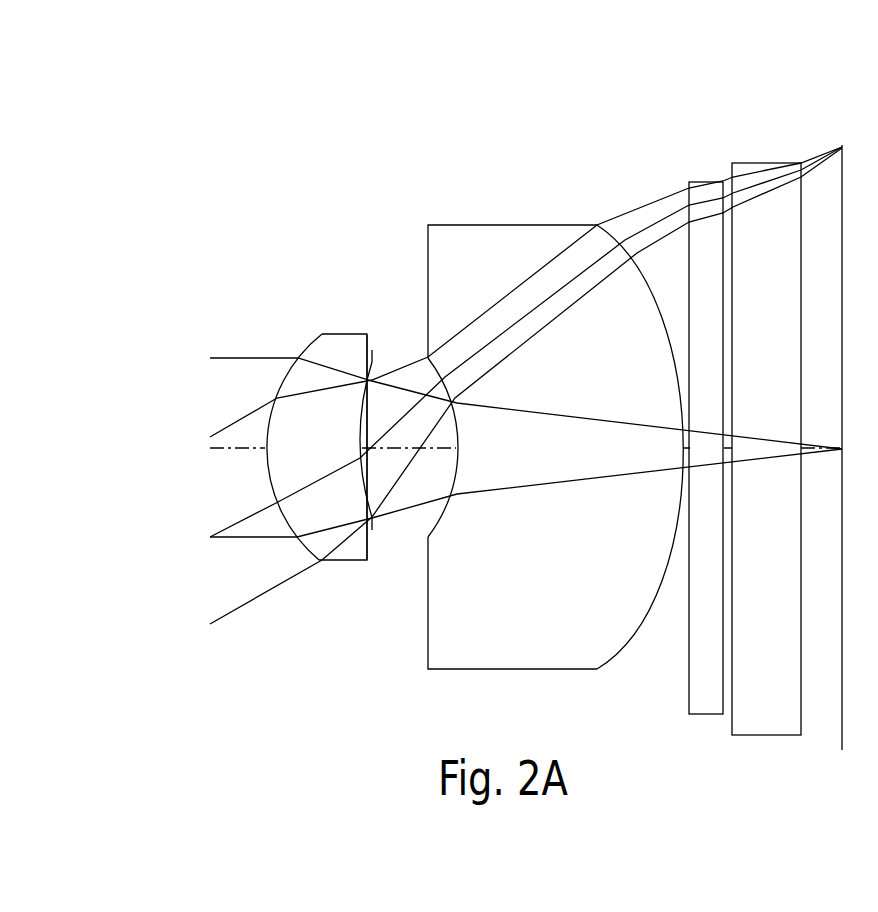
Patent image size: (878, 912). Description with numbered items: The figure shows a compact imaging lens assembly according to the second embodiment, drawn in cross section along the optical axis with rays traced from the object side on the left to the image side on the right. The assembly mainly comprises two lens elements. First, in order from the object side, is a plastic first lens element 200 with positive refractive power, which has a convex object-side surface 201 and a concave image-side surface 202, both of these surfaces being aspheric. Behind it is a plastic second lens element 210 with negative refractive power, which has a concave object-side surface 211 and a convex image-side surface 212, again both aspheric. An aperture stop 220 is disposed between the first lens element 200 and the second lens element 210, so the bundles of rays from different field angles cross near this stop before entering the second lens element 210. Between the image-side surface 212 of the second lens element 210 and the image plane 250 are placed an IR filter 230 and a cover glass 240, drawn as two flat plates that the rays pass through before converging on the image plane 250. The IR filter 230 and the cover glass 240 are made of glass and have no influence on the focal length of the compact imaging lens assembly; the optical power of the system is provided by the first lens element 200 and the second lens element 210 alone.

The first lens element 200 is at (253, 438).
The object-side surface 201 is at (265, 453).
The image-side surface 202 is at (360, 470).
The second lens element 210 is at (548, 426).
The object-side surface 211 is at (458, 483).
The image-side surface 212 is at (676, 481).
The aperture stop 220 is at (373, 371).
The IR filter 230 is at (714, 246).
The cover glass 240 is at (783, 238).
The image plane 250 is at (842, 191).